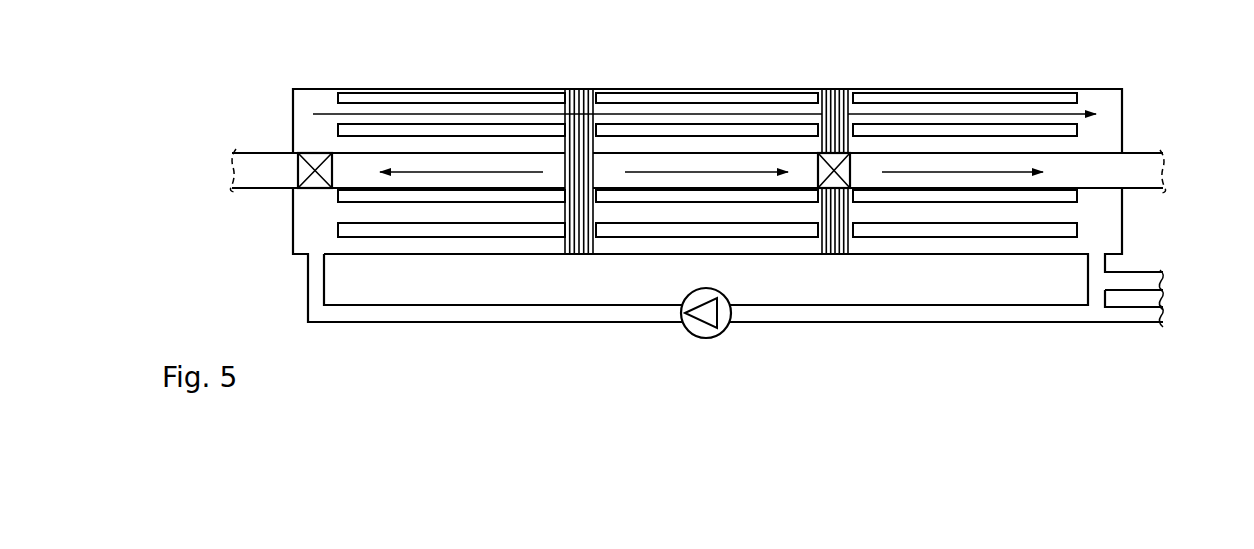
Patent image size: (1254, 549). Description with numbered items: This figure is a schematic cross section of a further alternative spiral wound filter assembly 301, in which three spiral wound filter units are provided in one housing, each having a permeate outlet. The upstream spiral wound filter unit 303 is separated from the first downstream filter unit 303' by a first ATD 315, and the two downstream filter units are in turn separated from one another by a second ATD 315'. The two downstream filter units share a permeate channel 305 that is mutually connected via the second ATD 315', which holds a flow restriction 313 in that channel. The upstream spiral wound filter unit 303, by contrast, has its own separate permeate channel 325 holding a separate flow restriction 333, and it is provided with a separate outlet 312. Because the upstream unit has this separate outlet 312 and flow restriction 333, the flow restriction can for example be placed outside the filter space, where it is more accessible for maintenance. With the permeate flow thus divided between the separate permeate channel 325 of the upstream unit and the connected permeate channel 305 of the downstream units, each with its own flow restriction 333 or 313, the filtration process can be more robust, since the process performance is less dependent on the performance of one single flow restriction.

The spiral wound filter assembly 301 is at (1155, 90).
The spiral wound filter unit 303 is at (439, 135).
The spiral wound filter unit 303' is at (693, 135).
The permeate channel 305 is at (1013, 181).
The outlet 312 is at (292, 172).
The flow restriction 313 is at (845, 172).
The ATD 315 is at (564, 144).
The ATD 315' is at (818, 144).
The permeate channel 325 is at (492, 181).
The flow restriction 333 is at (327, 173).